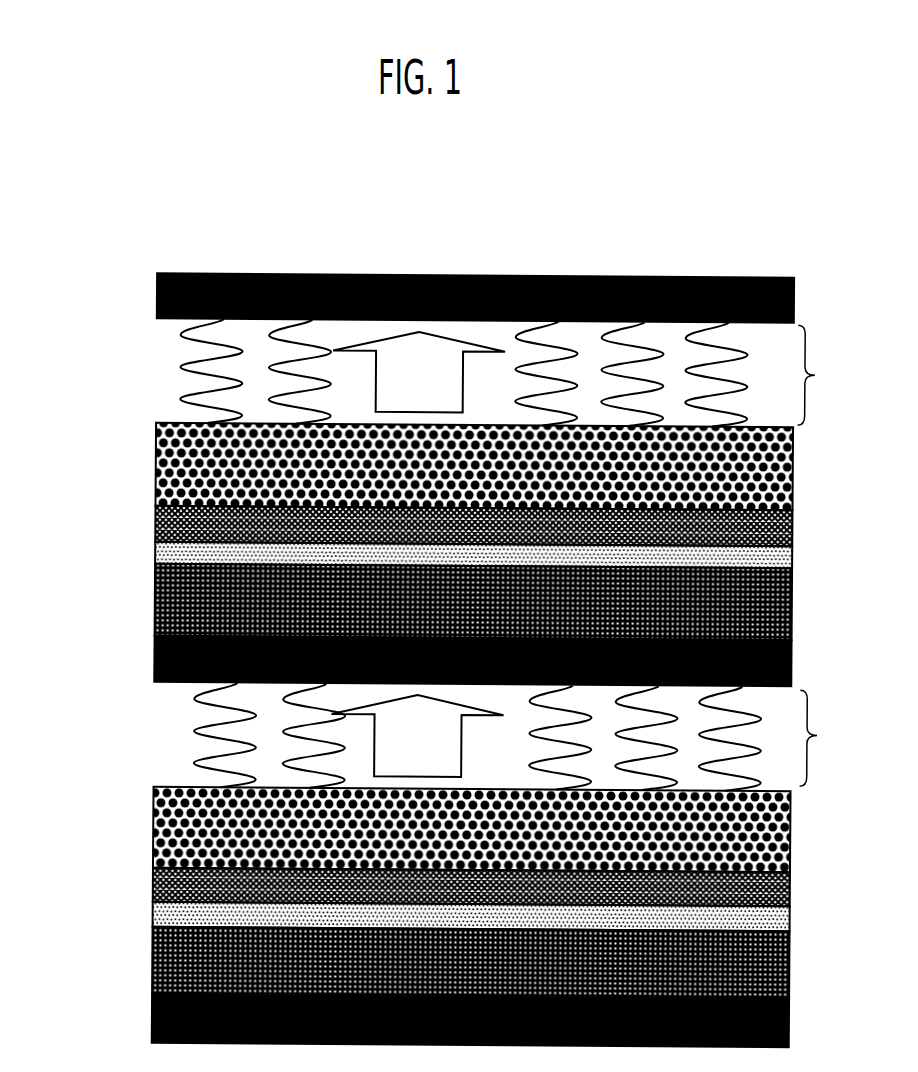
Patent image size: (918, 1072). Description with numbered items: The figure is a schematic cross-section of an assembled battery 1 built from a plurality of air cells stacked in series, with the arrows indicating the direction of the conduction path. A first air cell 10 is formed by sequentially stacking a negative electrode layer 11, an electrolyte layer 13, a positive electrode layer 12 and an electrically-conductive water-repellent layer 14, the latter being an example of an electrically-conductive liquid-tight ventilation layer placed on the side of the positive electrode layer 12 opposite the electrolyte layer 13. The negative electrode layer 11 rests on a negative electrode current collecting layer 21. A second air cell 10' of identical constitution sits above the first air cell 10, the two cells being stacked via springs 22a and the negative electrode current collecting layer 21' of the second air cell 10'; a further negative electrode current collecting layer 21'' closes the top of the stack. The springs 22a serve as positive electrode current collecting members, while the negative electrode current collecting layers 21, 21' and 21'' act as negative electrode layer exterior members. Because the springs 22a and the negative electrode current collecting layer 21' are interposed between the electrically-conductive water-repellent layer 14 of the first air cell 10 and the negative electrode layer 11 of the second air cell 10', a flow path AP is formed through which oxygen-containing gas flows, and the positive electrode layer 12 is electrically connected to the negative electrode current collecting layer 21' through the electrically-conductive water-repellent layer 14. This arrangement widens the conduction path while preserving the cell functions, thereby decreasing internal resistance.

The assembled battery 1 is at (164, 259).
The first air cell 10 is at (407, 892).
The second air cell 10' is at (439, 531).
The negative electrode layer 11 is at (438, 962).
The positive electrode layer 12 is at (154, 880).
The electrolyte layer 13 is at (154, 910).
The electrically-conductive water-repellent layer 14 is at (154, 822).
The negative electrode current collecting layer 21 is at (438, 1020).
The negative electrode current collecting layer 21' is at (436, 660).
The negative electrode current collecting layer 21'' is at (434, 293).
The springs 22a is at (178, 369).
The flow path AP is at (855, 382).